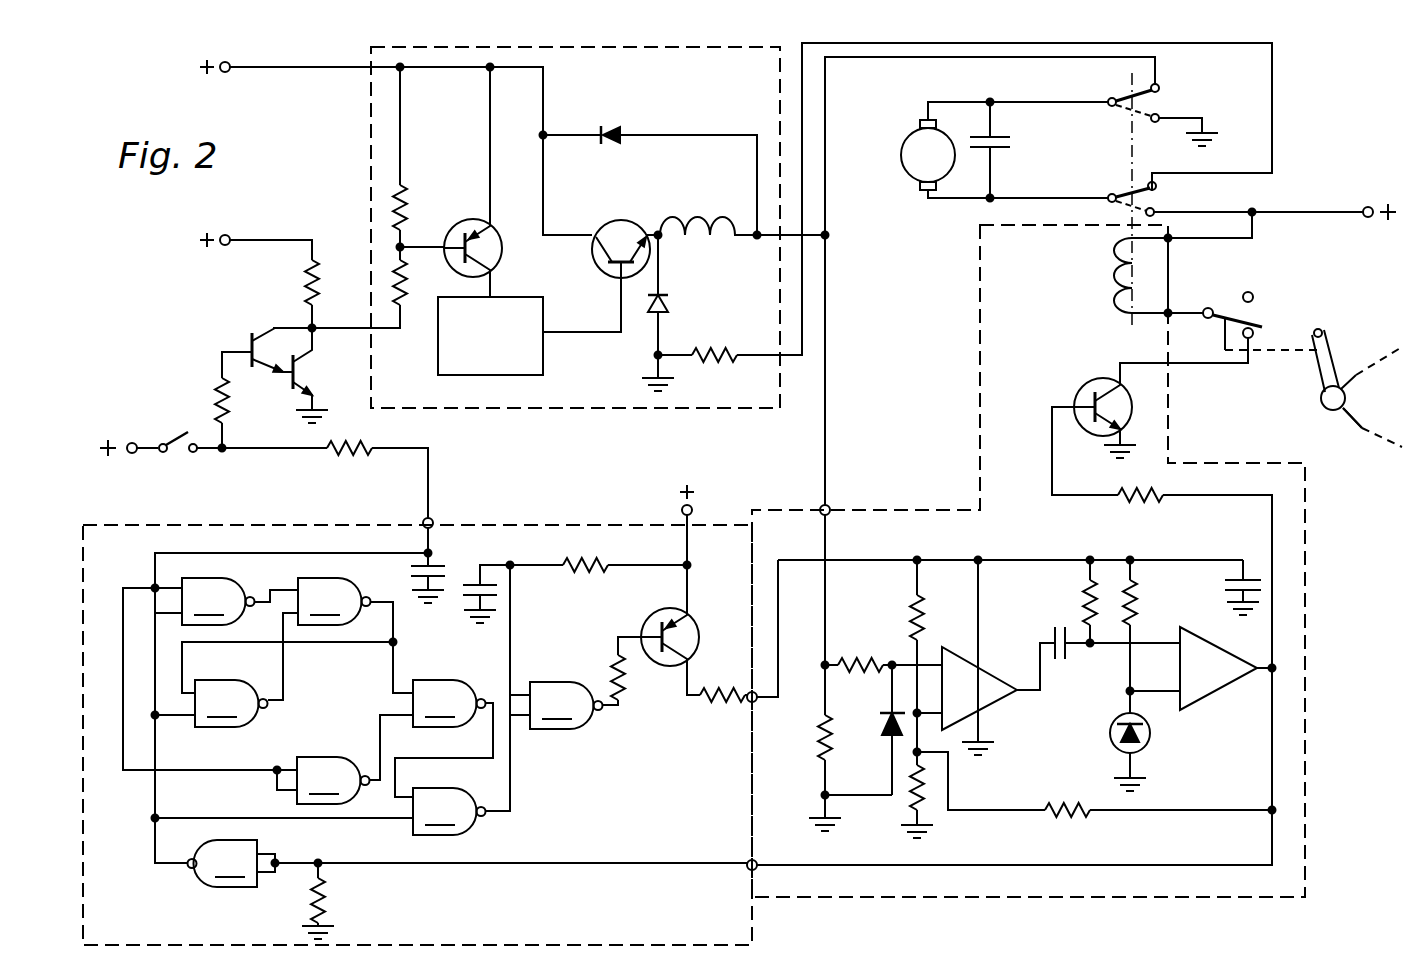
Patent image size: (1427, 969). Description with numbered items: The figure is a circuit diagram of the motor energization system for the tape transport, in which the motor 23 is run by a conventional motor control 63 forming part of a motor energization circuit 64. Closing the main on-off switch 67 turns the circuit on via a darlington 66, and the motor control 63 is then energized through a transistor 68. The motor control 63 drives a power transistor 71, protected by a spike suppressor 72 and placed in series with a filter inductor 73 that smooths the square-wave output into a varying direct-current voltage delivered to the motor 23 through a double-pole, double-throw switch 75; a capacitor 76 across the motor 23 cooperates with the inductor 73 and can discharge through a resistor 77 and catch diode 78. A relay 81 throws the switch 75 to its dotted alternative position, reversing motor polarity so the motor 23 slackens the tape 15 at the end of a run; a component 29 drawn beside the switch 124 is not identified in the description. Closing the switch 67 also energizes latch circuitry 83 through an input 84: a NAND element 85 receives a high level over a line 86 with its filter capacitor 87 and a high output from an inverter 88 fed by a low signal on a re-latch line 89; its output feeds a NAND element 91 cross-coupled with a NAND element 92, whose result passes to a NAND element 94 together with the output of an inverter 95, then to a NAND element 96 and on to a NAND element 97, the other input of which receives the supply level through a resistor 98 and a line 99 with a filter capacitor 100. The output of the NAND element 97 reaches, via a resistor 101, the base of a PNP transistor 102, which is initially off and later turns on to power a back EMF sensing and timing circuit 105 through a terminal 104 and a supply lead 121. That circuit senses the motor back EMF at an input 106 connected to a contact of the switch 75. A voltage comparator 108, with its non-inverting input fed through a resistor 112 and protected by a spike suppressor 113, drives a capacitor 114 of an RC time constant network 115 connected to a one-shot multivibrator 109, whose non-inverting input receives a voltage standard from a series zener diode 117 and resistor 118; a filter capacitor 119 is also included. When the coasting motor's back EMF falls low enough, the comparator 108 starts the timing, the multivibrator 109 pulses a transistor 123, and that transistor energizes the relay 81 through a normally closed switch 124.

The tape 15 is at (1350, 425).
The motor 23 is at (908, 180).
The lever arm 29 is at (1312, 372).
The motor control 63 is at (545, 366).
The motor energization circuit 64 is at (700, 109).
The darlington 66 is at (304, 376).
The main on-off switch 67 is at (184, 420).
The transistor 68 is at (502, 262).
The power transistor 71 is at (608, 224).
The spike suppressor 72 is at (612, 124).
The filter inductor 73 is at (714, 226).
The double-pole, double-throw switch 75 is at (1097, 128).
The capacitor 76 is at (1000, 146).
The resistor 77 is at (712, 352).
The catch diode 78 is at (672, 299).
The relay 81 is at (1112, 275).
The latch circuitry 83 is at (602, 921).
The input 84 is at (433, 515).
The NAND element 85 is at (240, 601).
The line 86 is at (332, 562).
The filter capacitor 87 is at (412, 575).
The inverter 88 is at (232, 863).
The re-latch line 89 is at (568, 862).
The NAND element 91 is at (297, 635).
The NAND element 92 is at (246, 670).
The NAND element 94 is at (444, 738).
The inverter 95 is at (355, 759).
The NAND element 96 is at (471, 700).
The NAND element 97 is at (574, 705).
The resistor 98 is at (590, 562).
The line 99 is at (512, 642).
The filter capacitor 100 is at (464, 614).
The resistor 101 is at (614, 674).
The PNP transistor 102 is at (678, 668).
The terminal 104 is at (748, 706).
The back EMF sensing and timing circuit 105 is at (1052, 336).
The input 106 is at (828, 506).
The voltage comparator 108 is at (960, 650).
The one-shot multivibrator 109 is at (1192, 700).
The resistor 112 is at (878, 656).
The spike suppressor 113 is at (888, 742).
The capacitor 114 is at (1062, 664).
The RC time constant network 115 is at (1052, 615).
The zener diode 117 is at (1106, 752).
The resistor 118 is at (1136, 604).
The filter capacitor 119 is at (1250, 578).
The supply lead 121 is at (1040, 558).
The transistor 123 is at (1084, 390).
The normally closed switch 124 is at (1256, 322).